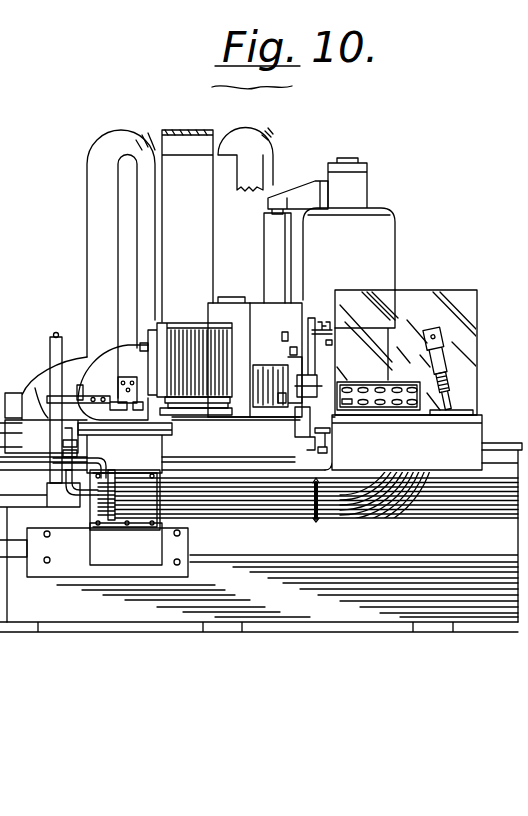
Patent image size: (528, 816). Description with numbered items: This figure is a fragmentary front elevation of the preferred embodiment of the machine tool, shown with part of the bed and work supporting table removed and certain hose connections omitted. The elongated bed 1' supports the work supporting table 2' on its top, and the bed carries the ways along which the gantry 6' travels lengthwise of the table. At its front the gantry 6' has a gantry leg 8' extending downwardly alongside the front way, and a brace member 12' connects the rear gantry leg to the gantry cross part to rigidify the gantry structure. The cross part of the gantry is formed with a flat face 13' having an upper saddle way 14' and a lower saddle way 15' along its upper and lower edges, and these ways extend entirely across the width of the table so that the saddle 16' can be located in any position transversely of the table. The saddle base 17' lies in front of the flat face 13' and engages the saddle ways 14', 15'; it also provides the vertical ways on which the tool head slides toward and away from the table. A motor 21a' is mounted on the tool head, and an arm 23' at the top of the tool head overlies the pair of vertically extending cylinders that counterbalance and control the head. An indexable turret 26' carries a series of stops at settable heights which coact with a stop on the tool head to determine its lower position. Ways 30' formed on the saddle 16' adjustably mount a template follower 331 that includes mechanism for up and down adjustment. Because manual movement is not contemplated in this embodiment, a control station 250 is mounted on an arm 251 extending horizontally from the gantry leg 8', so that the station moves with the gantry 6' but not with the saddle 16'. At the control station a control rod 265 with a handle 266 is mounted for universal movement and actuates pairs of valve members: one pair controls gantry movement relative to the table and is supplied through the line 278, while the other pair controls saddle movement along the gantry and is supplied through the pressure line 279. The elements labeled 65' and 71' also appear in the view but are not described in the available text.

The bed 1' is at (261, 560).
The work supporting table 2' is at (136, 162).
The gantry 6' is at (160, 495).
The gantry leg 8' is at (136, 448).
The brace member 12' is at (74, 388).
The flat face 13' is at (186, 343).
The upper saddle way 14' is at (187, 226).
The lower saddle way 15' is at (214, 419).
The saddle 16' is at (258, 258).
The saddle base 17' is at (255, 360).
The motor 21a' is at (380, 269).
The arm 23' is at (298, 174).
The indexable turret 26' is at (277, 374).
The ways 30' is at (234, 357).
The bent exhaust pipe 65' is at (77, 250).
The support plate 71' is at (196, 429).
The control station 250 is at (445, 284).
The arm 251 is at (283, 520).
The control rod 265 is at (448, 404).
The handle 266 is at (443, 360).
The line 278 is at (278, 490).
The pressure line 279 is at (373, 508).
The template follower 331 is at (322, 400).